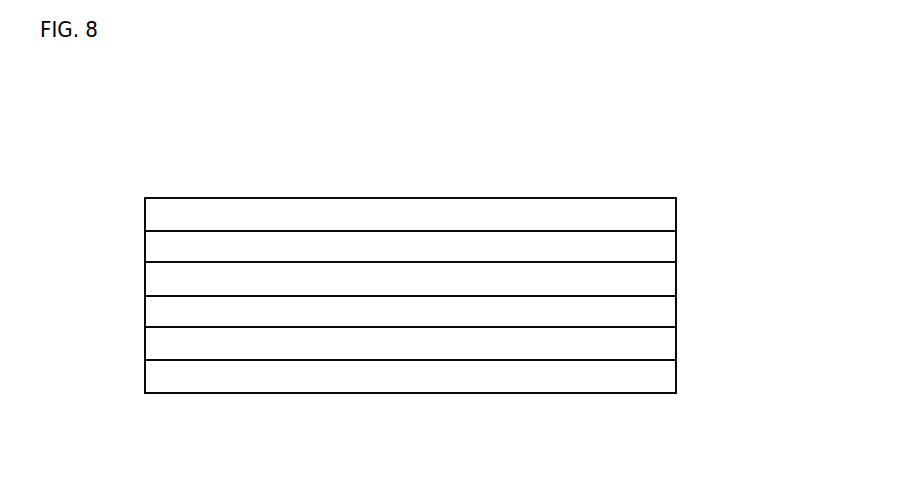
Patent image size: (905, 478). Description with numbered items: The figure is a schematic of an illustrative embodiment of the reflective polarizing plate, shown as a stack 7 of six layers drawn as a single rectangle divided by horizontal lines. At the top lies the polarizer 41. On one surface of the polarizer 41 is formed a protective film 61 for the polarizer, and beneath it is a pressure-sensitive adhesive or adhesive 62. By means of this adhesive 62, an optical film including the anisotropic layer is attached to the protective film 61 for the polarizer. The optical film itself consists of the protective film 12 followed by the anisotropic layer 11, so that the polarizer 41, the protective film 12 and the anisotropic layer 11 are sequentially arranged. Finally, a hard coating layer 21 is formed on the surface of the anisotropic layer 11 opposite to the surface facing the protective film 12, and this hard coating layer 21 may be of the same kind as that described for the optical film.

The laminated stack 7 is at (200, 165).
The polarizer 41 is at (603, 206).
The protective film for a polarizer 61 is at (662, 245).
The pressure-sensitive adhesive or adhesive 62 is at (162, 283).
The protective film 12 is at (158, 313).
The anisotropic layer 11 is at (651, 343).
The hard coating layer 21 is at (587, 385).